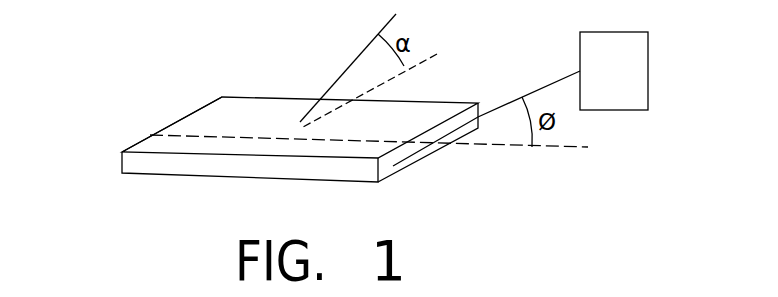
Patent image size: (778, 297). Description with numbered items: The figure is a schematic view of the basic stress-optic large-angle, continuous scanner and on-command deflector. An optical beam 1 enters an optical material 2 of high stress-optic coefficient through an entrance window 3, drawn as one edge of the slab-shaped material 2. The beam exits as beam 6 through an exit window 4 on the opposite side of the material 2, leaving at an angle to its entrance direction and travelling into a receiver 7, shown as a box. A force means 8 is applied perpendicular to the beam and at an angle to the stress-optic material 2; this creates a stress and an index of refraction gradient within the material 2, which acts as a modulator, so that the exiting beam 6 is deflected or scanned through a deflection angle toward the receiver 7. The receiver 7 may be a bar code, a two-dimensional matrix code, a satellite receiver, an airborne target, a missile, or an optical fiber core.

The optical beam 1 is at (150, 135).
The optical material 2 is at (250, 107).
The entrance window 3 is at (183, 114).
The exit window 4 is at (392, 164).
The exit beam 6 is at (507, 102).
The receiver 7 is at (610, 81).
The force means 8 is at (379, 31).